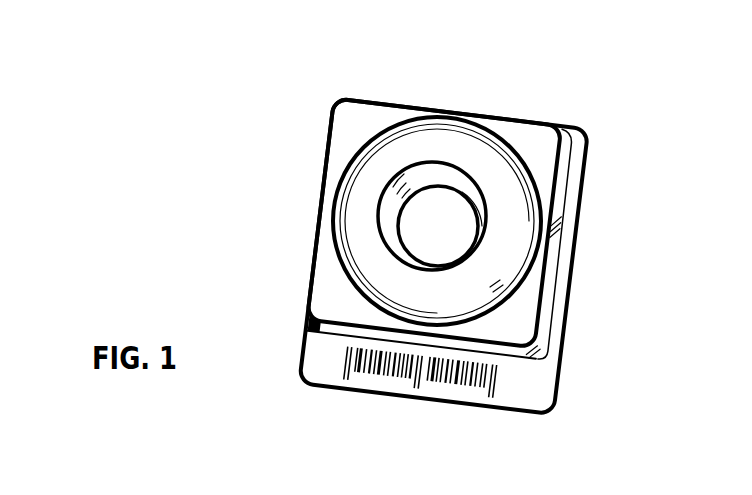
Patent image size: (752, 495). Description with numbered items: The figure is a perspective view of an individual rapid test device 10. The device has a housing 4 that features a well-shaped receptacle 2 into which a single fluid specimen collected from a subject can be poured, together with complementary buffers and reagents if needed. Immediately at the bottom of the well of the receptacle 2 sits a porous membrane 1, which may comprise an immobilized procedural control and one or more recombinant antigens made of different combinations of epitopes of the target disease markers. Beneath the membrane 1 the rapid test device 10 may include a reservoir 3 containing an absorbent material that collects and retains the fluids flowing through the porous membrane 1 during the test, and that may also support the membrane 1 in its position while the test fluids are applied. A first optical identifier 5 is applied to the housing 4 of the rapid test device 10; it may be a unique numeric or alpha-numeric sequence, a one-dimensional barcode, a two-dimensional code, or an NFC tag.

The rapid test device 10 is at (186, 95).
The porous membrane 1 is at (427, 213).
The well-shaped receptacle 2 is at (423, 172).
The reservoir 3 is at (525, 133).
The housing 4 is at (573, 207).
The first optical identifier 5 is at (438, 401).